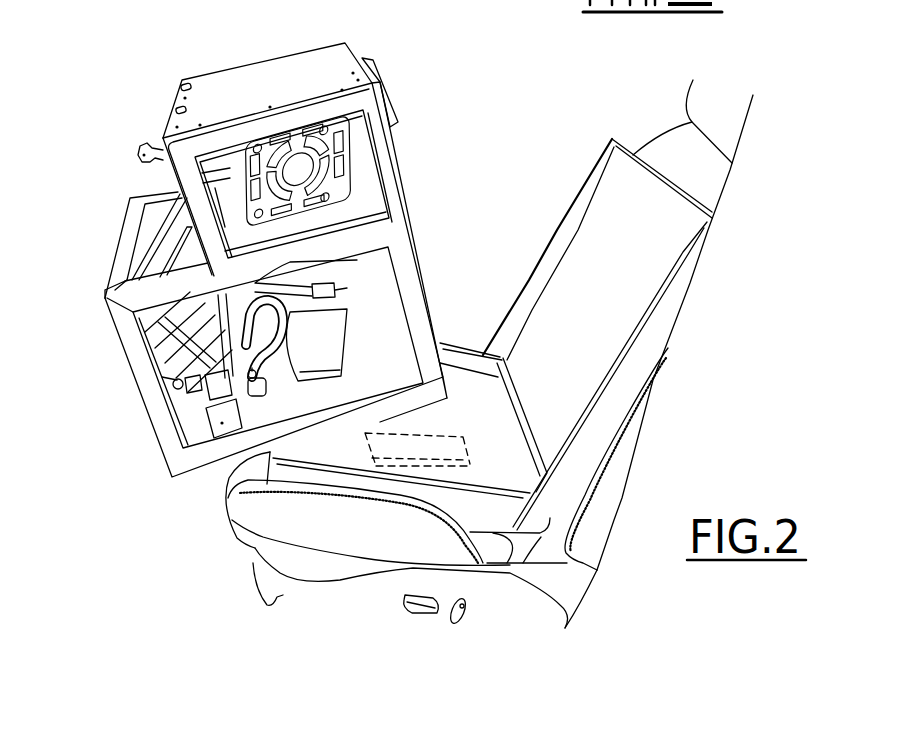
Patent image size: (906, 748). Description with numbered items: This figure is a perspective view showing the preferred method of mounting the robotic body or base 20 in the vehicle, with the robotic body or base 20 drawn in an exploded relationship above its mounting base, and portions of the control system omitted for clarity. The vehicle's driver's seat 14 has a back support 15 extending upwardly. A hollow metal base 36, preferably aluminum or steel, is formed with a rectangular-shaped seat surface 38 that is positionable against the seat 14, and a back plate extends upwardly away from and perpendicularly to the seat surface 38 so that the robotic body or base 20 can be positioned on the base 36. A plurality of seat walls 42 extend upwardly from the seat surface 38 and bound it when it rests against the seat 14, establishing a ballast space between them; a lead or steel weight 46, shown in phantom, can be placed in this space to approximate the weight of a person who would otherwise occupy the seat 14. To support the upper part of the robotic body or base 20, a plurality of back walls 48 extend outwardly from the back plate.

The driver's seat 14 is at (664, 146).
The back support 15 is at (617, 413).
The robotic body or base 20 is at (240, 77).
The base 36 is at (504, 313).
The seat surface 38 is at (225, 489).
The seat walls 42 is at (449, 342).
The weight 46 is at (419, 446).
The back walls 48 is at (583, 192).